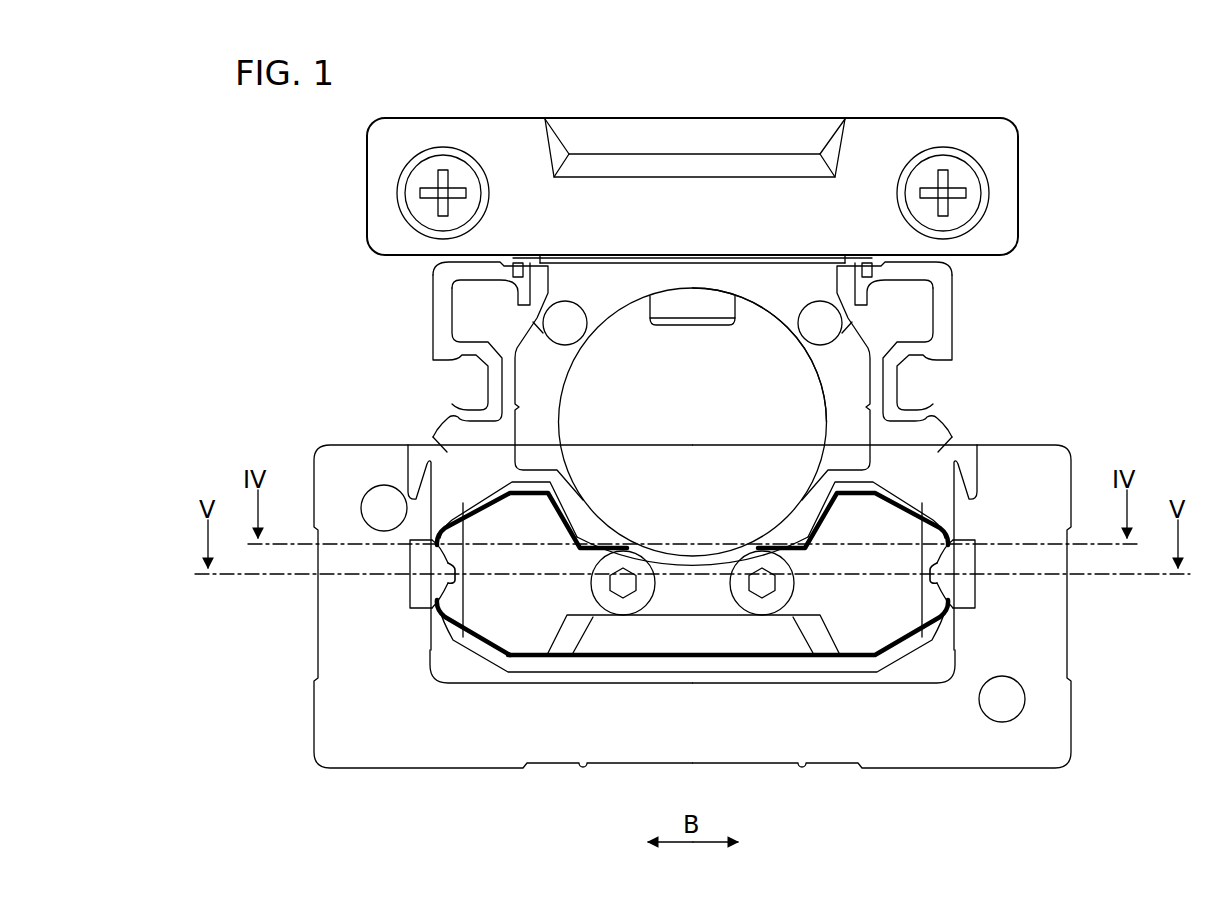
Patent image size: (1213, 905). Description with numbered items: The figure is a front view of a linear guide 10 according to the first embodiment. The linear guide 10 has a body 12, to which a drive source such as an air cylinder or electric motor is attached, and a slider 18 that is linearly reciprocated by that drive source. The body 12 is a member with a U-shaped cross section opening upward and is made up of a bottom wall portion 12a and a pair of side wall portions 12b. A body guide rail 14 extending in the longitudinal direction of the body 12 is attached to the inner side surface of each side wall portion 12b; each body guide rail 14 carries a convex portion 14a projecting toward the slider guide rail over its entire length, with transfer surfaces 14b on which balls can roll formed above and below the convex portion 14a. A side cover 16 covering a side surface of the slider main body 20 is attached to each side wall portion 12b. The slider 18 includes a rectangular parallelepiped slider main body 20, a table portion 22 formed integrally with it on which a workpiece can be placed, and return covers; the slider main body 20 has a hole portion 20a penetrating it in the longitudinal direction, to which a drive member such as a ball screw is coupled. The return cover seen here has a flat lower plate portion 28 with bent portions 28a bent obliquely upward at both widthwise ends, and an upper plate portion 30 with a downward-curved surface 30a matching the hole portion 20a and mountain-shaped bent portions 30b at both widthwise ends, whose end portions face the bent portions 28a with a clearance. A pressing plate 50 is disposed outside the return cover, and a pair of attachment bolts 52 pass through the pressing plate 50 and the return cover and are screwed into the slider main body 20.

The linear guide 10 is at (1078, 96).
The body 12 is at (658, 645).
The bottom wall portion 12a is at (826, 745).
The side wall portion 12b is at (340, 641).
The body guide rail 14 is at (725, 576).
The convex portion 14a is at (926, 579).
The transfer surface 14b is at (943, 536).
The side cover 16 is at (438, 318).
The slider 18 is at (743, 172).
The slider main body 20 is at (553, 372).
The hole portion 20a is at (814, 372).
The table portion 22 is at (862, 160).
The lower plate portion 28 is at (658, 676).
The bent portion 28a is at (497, 652).
The upper plate portion 30 is at (649, 556).
The curved surface 30a is at (679, 557).
The bent portion 30b is at (488, 498).
The pressing plate 50 is at (487, 612).
The attachment bolt 52 is at (765, 608).